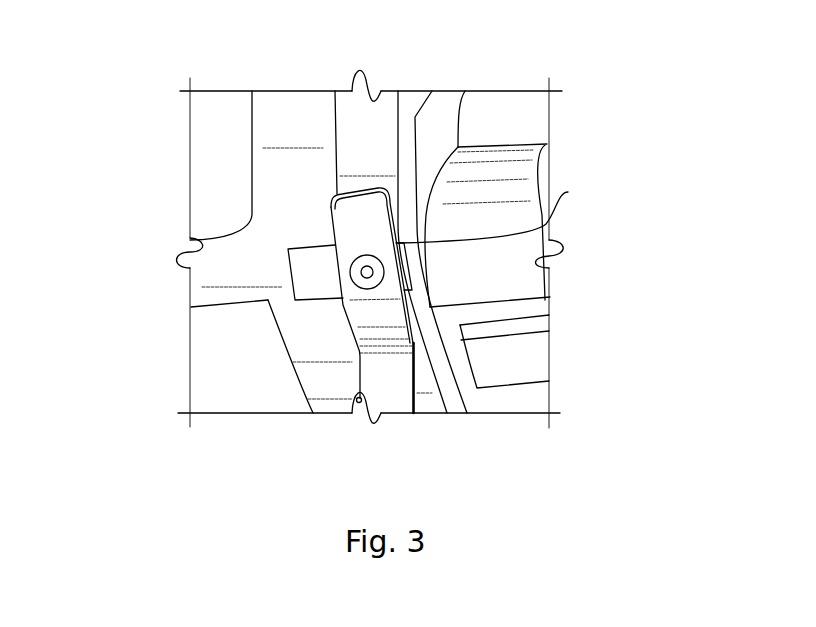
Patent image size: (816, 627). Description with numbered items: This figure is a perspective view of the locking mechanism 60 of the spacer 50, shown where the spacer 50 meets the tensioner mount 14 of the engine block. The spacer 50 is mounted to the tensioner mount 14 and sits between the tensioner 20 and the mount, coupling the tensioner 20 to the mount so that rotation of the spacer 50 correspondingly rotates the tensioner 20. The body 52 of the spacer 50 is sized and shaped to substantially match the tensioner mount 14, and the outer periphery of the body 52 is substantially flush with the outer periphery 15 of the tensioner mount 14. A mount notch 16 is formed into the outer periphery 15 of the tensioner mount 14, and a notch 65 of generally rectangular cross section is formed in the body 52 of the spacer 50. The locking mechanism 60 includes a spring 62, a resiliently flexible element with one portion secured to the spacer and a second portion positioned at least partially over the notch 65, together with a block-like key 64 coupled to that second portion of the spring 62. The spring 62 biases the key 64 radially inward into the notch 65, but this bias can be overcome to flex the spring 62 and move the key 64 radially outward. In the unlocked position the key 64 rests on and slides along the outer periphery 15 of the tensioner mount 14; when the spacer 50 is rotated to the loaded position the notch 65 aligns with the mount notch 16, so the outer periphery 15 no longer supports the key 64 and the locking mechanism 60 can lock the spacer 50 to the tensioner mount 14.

The tensioner mount 14 is at (271, 103).
The outer periphery 15 is at (287, 188).
The mount notch 16 is at (288, 262).
The tensioner 20 is at (531, 98).
The spacer 50 is at (390, 95).
The body 52 is at (343, 103).
The locking mechanism 60 is at (340, 350).
The spring 62 is at (399, 397).
The key 64 is at (300, 290).
The notch 65 is at (568, 192).